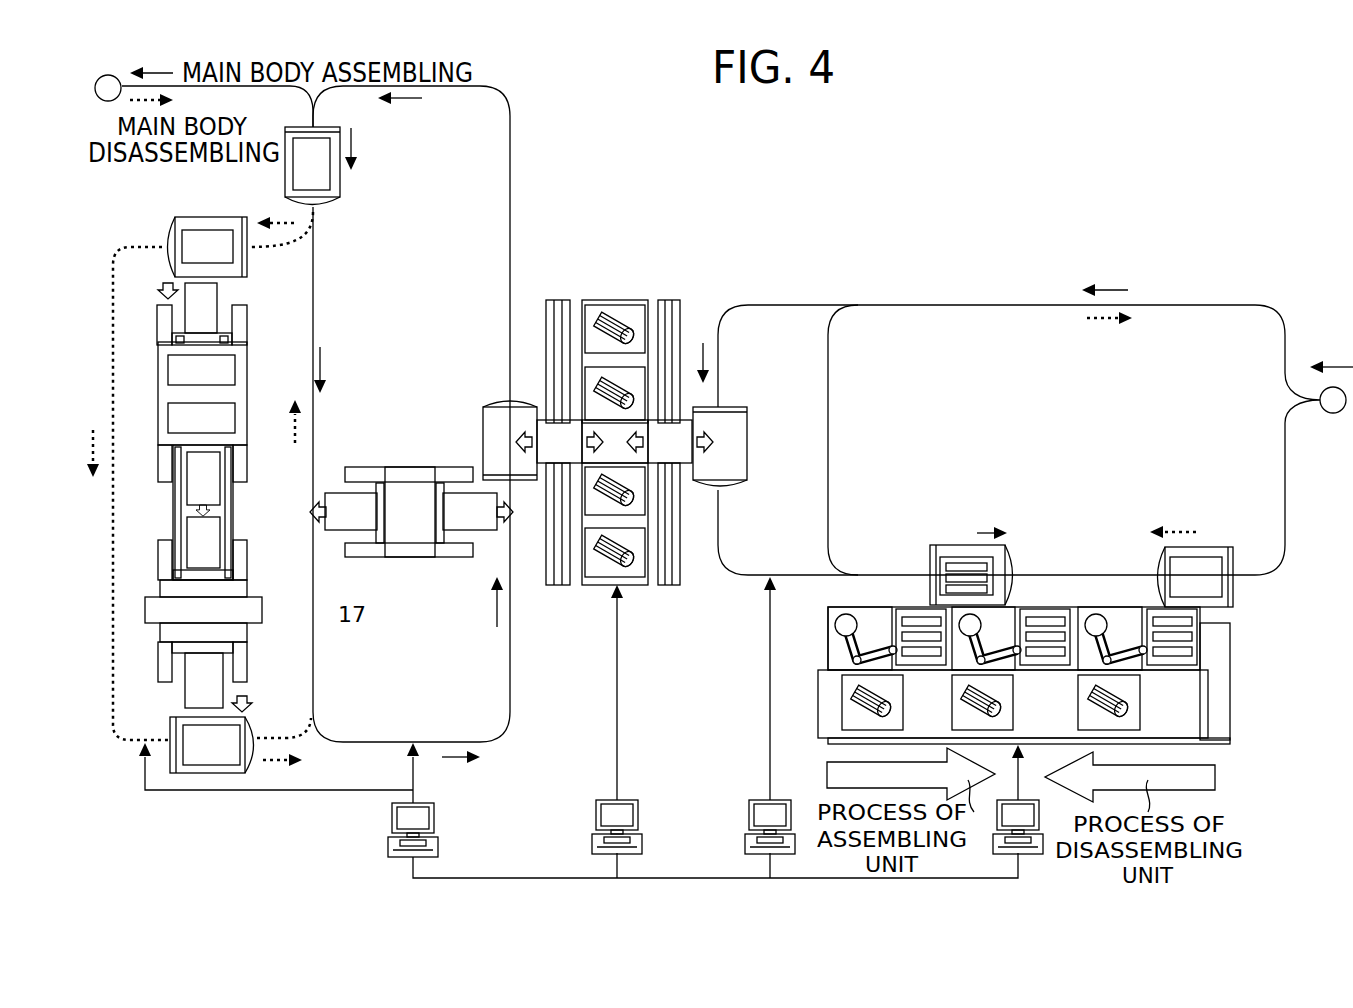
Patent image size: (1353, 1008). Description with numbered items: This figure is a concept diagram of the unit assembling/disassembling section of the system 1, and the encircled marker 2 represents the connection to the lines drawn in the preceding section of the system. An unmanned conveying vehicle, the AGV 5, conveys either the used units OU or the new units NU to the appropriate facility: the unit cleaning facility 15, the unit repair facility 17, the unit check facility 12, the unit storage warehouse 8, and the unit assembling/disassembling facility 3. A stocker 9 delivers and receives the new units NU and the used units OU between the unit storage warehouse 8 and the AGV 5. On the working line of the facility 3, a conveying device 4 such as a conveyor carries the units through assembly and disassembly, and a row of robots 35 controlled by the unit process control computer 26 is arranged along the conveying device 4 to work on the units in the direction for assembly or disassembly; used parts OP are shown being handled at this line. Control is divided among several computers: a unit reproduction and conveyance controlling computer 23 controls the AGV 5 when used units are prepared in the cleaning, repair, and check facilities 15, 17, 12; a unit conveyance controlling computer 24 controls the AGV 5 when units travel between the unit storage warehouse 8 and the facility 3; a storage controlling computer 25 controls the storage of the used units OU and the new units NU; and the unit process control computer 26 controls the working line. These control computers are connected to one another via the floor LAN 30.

The system 1 is at (1172, 204).
The connection marker 2 is at (108, 88).
The unit assembling/disassembling facility 3 is at (1067, 627).
The conveying device 4 is at (818, 707).
The unmanned conveying vehicle (AGV) 5 is at (340, 185).
The unit storage warehouse 8 is at (618, 425).
The stocker 9 is at (547, 578).
The unit check facility 12 is at (410, 469).
The unit cleaning facility 15 is at (247, 320).
The unit repair facility 17 is at (262, 608).
The unit reproduction and conveyance controlling computer 23 is at (436, 818).
The unit conveyance controlling computer 24 is at (766, 799).
The storage controlling computer 25 is at (619, 800).
The unit process control computer 26 is at (1022, 855).
The floor LAN 30 is at (612, 700).
The robots 35 is at (854, 605).
The used units OU is at (617, 304).
The new units NU is at (634, 568).
The used parts OP is at (1045, 605).